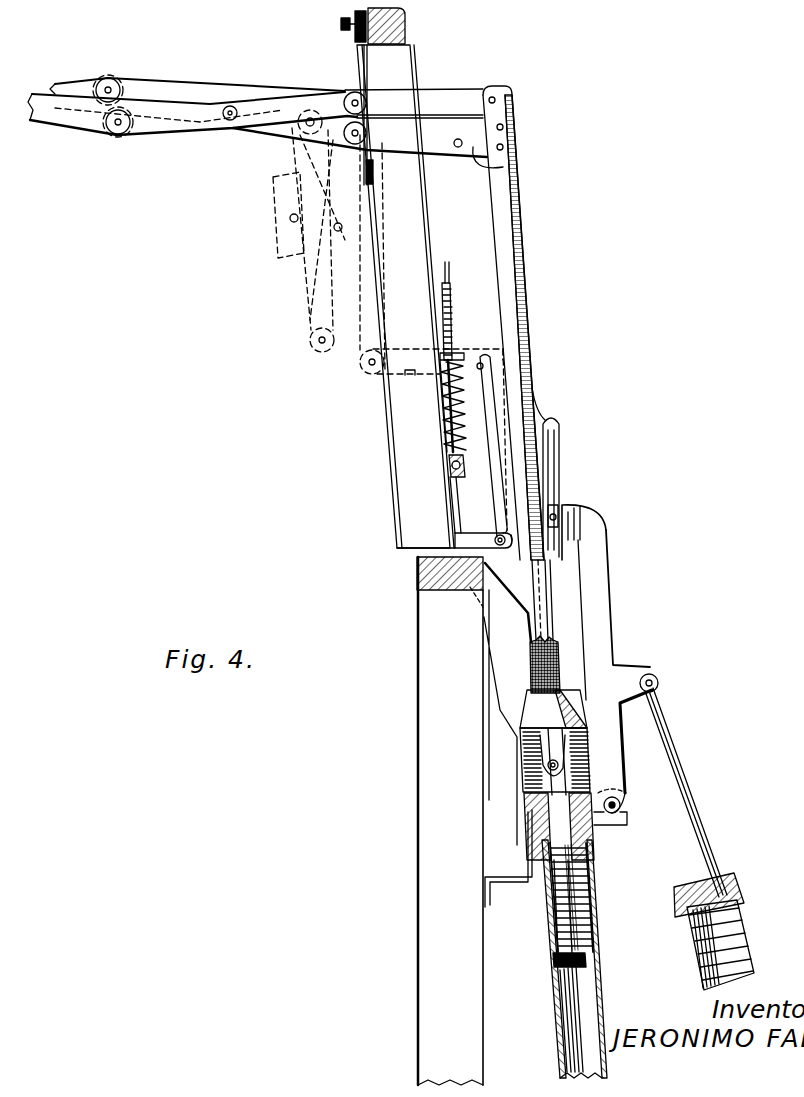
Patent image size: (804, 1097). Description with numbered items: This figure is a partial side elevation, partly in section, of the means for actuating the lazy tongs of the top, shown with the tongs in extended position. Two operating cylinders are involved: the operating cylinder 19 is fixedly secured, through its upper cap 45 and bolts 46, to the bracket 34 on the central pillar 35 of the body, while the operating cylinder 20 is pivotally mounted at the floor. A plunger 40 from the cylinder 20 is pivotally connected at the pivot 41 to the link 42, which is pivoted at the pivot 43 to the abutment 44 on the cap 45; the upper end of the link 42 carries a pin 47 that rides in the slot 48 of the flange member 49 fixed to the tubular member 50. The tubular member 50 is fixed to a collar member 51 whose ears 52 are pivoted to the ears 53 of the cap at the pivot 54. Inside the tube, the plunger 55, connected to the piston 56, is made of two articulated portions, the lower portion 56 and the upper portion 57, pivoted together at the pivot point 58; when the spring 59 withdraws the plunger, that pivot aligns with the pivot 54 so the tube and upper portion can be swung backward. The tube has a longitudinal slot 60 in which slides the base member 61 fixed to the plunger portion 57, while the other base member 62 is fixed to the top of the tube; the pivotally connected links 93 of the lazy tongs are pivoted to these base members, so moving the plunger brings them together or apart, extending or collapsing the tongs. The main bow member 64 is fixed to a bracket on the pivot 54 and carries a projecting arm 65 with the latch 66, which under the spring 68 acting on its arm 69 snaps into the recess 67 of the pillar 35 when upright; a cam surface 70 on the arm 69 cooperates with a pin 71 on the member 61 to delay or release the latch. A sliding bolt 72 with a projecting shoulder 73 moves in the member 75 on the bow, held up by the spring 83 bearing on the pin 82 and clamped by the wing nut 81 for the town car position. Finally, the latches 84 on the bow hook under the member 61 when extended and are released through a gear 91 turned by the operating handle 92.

The operating cylinder 19 is at (604, 965).
The operating cylinder 20 is at (722, 935).
The bracket 34 is at (510, 883).
The central pillar 35 is at (435, 882).
The plunger 40 is at (670, 765).
The pivot 41 is at (659, 682).
The link 42 is at (597, 612).
The pivot 43 is at (627, 807).
The abutment 44 is at (604, 822).
The upper cap 45 is at (545, 824).
The bolts 46 is at (515, 810).
The pin 47 is at (567, 505).
The slot 48 is at (556, 430).
The flange member 49 is at (540, 414).
The tubular member 50 is at (527, 308).
The collar member 51 is at (572, 697).
The ears 52 is at (532, 745).
The ears 53 is at (525, 768).
The pivot 54 is at (580, 760).
The plunger 55 is at (560, 930).
The piston / lower plunger portion 56 is at (550, 587).
The upper plunger portion 57 is at (525, 252).
The pivot point 58 is at (562, 535).
The spring 59 is at (595, 863).
The longitudinal slot 60 is at (492, 216).
The base member 61 is at (505, 165).
The base member 62 is at (437, 97).
The main bow member 64 is at (407, 427).
The projecting arm 65 is at (457, 533).
The latch 66 is at (407, 550).
The recess 67 is at (417, 580).
The spring 68 is at (443, 433).
The arm 69 is at (473, 393).
The cam surface 70 is at (447, 353).
The pin 71 is at (462, 142).
The sliding bolt 72 is at (455, 306).
The projecting shoulder 73 is at (444, 282).
The member 75 is at (470, 487).
The wing nut 81 is at (450, 467).
The pin 82 is at (458, 352).
The spring 83 is at (470, 373).
The latch 84 is at (375, 172).
The gear 91 is at (352, 40).
The operating handle 92 is at (344, 22).
The links 93 is at (147, 97).